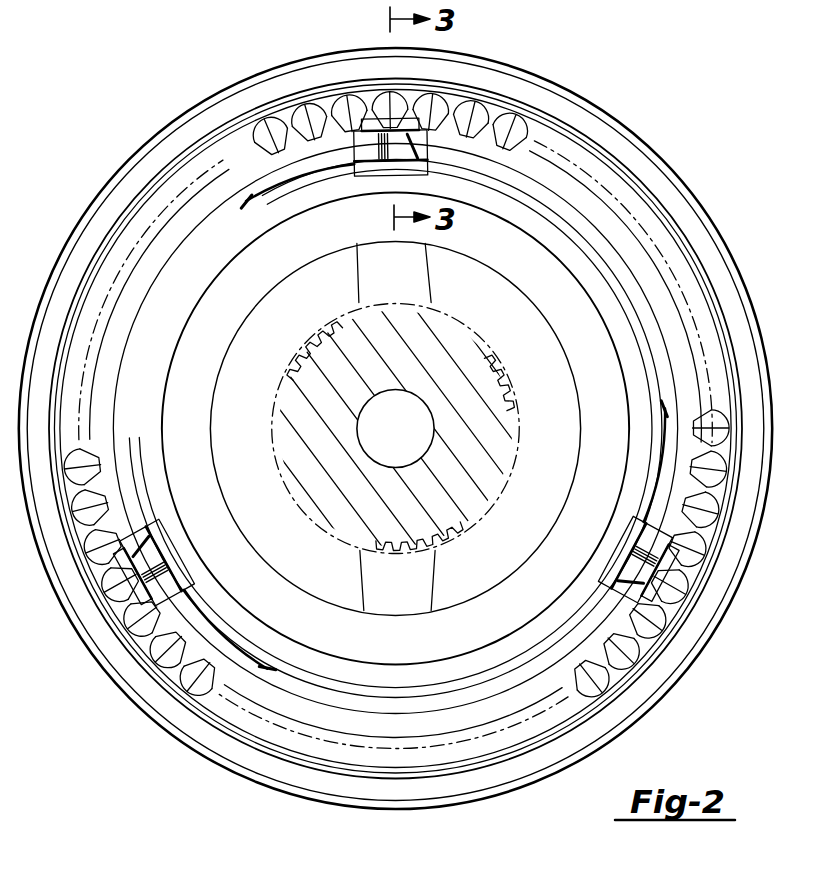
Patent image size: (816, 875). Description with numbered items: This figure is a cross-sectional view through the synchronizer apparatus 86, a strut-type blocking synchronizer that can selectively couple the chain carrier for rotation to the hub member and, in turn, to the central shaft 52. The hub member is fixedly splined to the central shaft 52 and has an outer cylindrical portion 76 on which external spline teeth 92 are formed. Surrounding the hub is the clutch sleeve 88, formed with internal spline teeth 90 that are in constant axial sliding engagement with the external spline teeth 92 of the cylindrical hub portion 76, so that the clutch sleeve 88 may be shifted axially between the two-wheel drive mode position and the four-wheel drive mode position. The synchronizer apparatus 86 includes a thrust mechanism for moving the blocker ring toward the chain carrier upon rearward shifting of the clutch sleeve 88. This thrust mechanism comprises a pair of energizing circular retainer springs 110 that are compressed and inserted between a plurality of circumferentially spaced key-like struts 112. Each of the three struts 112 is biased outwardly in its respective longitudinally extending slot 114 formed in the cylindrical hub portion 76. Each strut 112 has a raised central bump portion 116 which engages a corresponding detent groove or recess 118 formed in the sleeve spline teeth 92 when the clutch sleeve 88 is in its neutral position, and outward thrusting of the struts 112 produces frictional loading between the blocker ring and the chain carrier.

The central shaft 52 is at (452, 345).
The outer cylindrical portion 76 is at (240, 162).
The synchronizer apparatus 86 is at (722, 72).
The clutch sleeve 88 is at (648, 175).
The internal spline teeth 90 is at (635, 640).
The external spline teeth 92 is at (632, 617).
The circular retainer springs 110 is at (203, 607).
The struts 112 is at (628, 517).
The slots 114 is at (652, 597).
The raised central bump portion 116 is at (675, 553).
The detent groove 118 is at (712, 595).